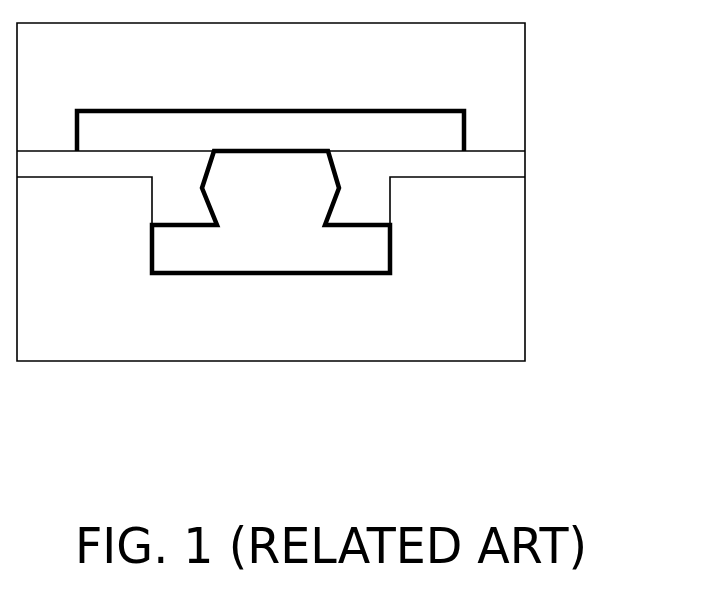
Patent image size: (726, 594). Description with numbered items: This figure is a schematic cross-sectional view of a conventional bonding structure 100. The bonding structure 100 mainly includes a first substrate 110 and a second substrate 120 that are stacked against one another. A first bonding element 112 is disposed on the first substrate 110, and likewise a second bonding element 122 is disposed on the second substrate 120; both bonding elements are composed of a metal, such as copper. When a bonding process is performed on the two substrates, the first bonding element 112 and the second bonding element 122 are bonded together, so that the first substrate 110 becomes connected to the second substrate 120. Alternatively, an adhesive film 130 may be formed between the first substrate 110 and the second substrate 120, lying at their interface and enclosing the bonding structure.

The bonding structure 100 is at (597, 430).
The first substrate 110 is at (485, 325).
The first bonding element 112 is at (353, 249).
The second substrate 120 is at (443, 75).
The second bonding element 122 is at (439, 136).
The adhesive film 130 is at (495, 163).